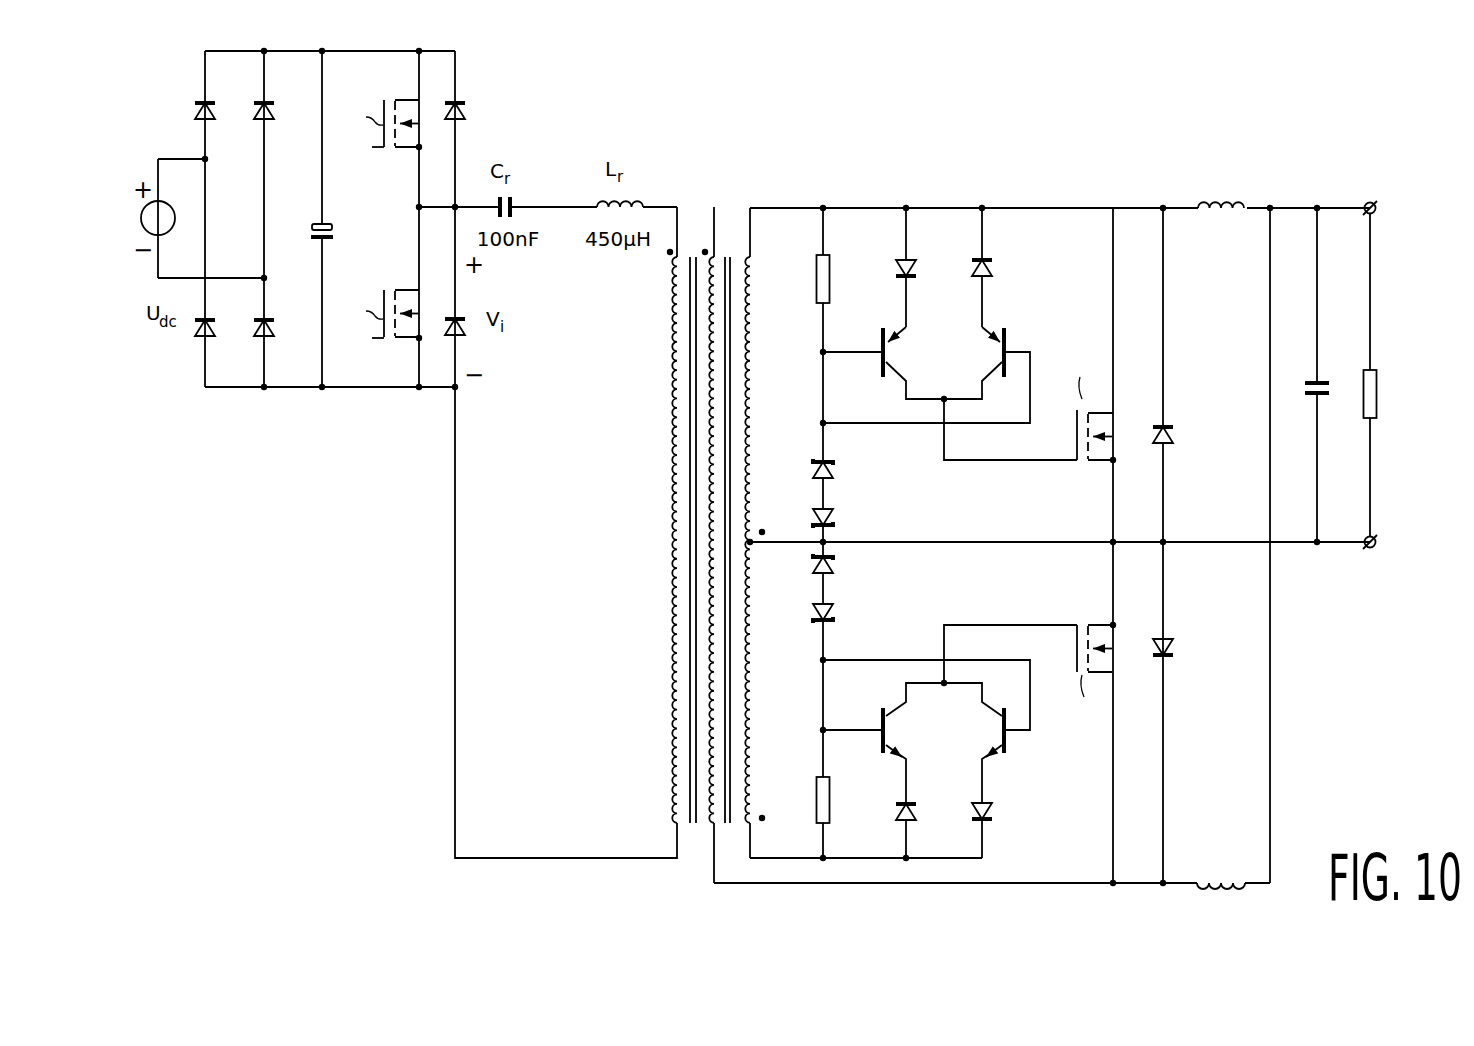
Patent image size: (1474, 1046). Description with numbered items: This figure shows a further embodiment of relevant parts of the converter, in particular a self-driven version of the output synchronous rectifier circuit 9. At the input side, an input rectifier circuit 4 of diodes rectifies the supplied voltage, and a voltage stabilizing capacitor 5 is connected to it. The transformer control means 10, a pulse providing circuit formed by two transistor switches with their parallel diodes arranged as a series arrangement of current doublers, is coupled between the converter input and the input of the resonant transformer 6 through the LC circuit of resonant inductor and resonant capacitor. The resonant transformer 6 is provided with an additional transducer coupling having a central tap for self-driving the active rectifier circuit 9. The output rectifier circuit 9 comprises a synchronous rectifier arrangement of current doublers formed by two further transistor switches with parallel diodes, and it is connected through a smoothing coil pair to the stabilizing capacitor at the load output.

The input rectifier circuit 4 is at (240, 408).
The voltage stabilizing capacitor 5 is at (310, 232).
The resonant transformer 6 is at (728, 190).
The output rectifier circuit 9 is at (1047, 190).
The transformer control means 10 is at (487, 113).